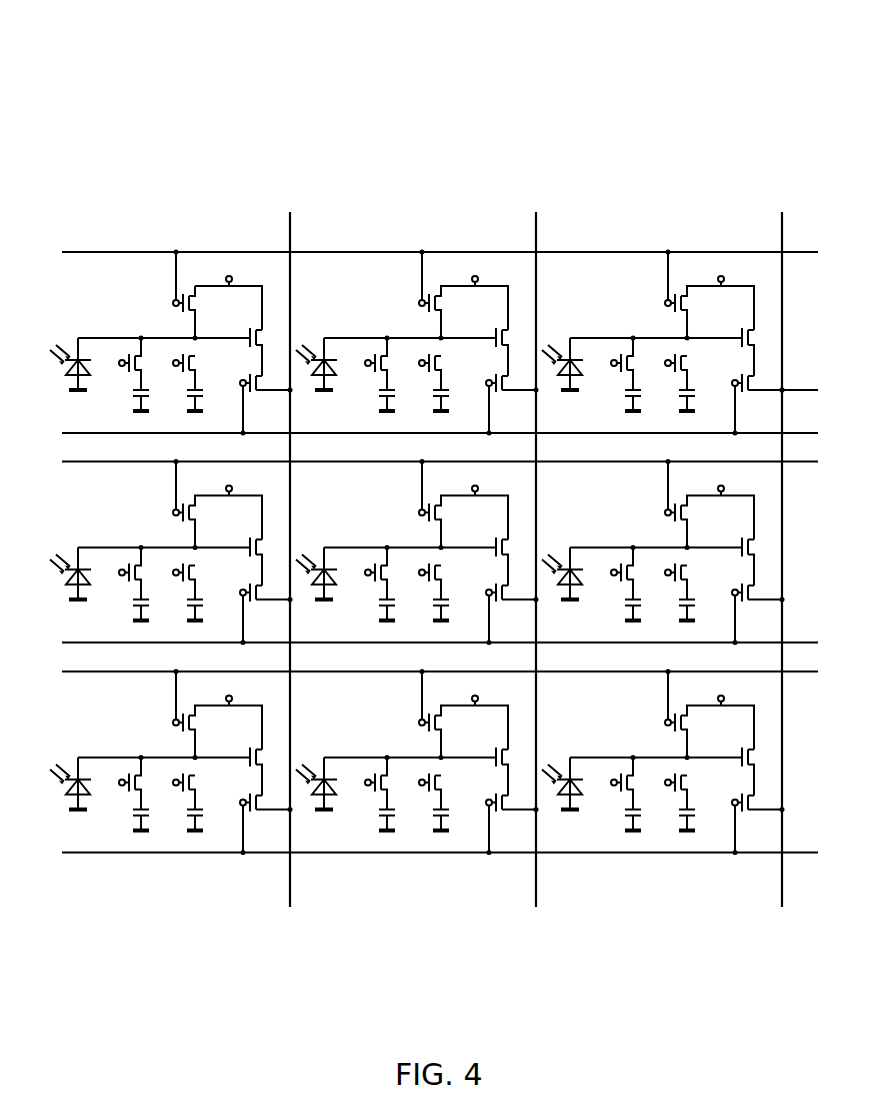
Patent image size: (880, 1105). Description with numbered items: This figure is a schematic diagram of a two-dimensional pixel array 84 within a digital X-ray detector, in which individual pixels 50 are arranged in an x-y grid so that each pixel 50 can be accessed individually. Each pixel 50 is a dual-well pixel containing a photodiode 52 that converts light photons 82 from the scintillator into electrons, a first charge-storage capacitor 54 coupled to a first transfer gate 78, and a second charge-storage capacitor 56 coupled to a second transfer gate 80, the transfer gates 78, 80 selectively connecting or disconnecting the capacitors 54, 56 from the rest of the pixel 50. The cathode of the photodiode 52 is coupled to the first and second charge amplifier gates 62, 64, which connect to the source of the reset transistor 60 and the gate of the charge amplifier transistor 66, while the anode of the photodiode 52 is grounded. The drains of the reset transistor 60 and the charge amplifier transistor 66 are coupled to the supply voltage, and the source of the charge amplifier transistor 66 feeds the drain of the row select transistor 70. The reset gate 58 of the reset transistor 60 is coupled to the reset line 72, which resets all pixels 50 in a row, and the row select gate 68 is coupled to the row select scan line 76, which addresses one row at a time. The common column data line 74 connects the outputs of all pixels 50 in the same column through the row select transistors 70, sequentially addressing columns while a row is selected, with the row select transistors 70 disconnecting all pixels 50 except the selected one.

The multi-well pixel 50 is at (408, 553).
The photodiode 52 is at (128, 376).
The first charge-storage capacitor 54 is at (148, 397).
The second charge-storage capacitor 56 is at (202, 397).
The reset gate 58 is at (174, 300).
The reset transistor 60 is at (188, 311).
The first charge amplifier gate 62 is at (138, 337).
The second charge amplifier gate 64 is at (199, 335).
The charge amplifier transistor 66 is at (254, 325).
The row select gate 68 is at (240, 380).
The row select transistor 70 is at (262, 393).
The reset line 72 is at (803, 258).
The common column data line 74 is at (288, 879).
The row select scan line 76 is at (806, 430).
The first transfer gate 78 is at (77, 349).
The second transfer gate 80 is at (175, 362).
The light photons 82 is at (60, 368).
The 2D pixel array 84 is at (207, 73).